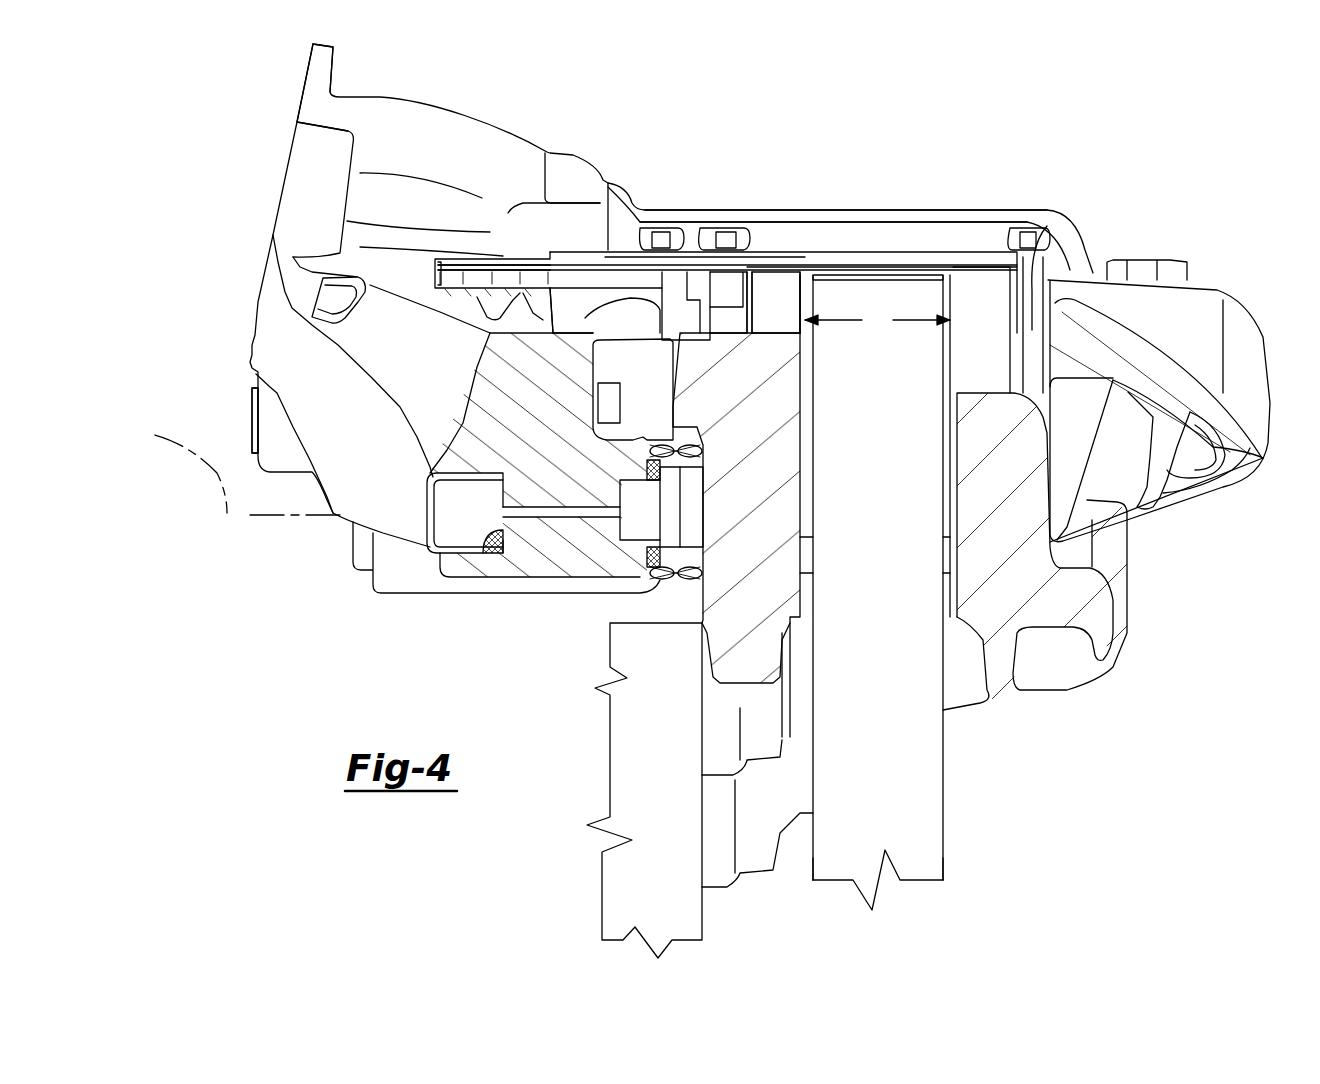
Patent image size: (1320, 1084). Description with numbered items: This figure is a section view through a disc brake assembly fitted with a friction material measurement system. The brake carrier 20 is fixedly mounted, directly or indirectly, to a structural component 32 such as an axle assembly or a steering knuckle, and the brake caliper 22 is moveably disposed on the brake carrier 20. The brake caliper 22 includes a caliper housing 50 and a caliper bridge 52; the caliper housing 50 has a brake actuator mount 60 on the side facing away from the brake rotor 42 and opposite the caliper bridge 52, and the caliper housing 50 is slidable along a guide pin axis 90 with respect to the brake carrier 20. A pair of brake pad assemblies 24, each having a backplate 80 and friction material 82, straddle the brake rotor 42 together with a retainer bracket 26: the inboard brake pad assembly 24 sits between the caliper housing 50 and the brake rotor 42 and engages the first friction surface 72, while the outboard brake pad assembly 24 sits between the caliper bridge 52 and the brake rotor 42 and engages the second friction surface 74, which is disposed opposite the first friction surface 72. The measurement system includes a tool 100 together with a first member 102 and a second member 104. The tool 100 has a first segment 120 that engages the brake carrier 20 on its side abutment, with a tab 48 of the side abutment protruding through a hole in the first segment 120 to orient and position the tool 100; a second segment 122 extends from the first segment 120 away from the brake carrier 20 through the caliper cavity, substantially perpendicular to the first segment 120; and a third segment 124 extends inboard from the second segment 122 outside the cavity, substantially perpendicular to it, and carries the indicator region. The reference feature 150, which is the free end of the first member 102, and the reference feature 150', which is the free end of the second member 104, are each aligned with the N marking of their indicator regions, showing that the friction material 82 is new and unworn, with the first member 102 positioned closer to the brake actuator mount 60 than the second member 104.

The brake carrier 20 is at (1013, 481).
The brake caliper 22 is at (253, 347).
The brake pad assembly 24 is at (877, 318).
The retainer bracket 26 is at (882, 208).
The structural component 32 is at (668, 761).
The brake rotor 42 is at (893, 569).
The tab 48 is at (657, 307).
The caliper housing 50 is at (434, 150).
The caliper bridge 52 is at (1188, 332).
The brake actuator mount 60 is at (290, 171).
The first friction surface 72 is at (813, 858).
The second friction surface 74 is at (943, 858).
The backplate 80 is at (725, 278).
The friction material 82 is at (790, 277).
The guide pin axis 90 is at (236, 465).
The tool 100 is at (443, 290).
The first member 102 is at (463, 262).
The second member 104 is at (785, 256).
The first segment 120 is at (777, 337).
The second segment 122 is at (610, 301).
The third segment 124 is at (488, 292).
The reference feature 150 is at (695, 248).
The reference feature 150' is at (535, 231).